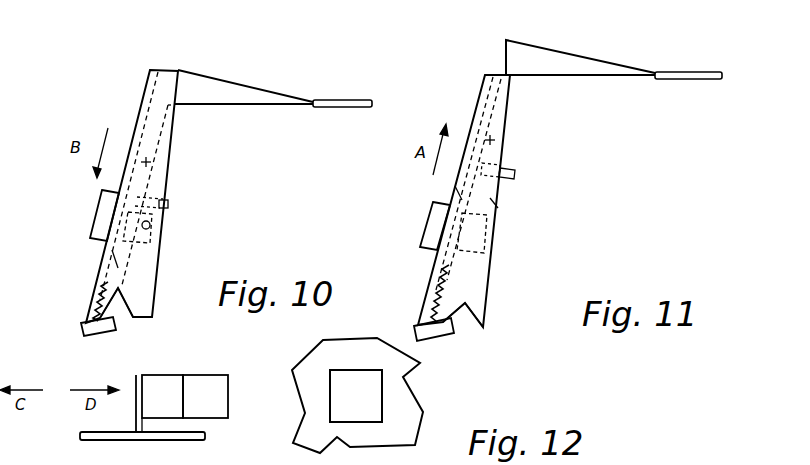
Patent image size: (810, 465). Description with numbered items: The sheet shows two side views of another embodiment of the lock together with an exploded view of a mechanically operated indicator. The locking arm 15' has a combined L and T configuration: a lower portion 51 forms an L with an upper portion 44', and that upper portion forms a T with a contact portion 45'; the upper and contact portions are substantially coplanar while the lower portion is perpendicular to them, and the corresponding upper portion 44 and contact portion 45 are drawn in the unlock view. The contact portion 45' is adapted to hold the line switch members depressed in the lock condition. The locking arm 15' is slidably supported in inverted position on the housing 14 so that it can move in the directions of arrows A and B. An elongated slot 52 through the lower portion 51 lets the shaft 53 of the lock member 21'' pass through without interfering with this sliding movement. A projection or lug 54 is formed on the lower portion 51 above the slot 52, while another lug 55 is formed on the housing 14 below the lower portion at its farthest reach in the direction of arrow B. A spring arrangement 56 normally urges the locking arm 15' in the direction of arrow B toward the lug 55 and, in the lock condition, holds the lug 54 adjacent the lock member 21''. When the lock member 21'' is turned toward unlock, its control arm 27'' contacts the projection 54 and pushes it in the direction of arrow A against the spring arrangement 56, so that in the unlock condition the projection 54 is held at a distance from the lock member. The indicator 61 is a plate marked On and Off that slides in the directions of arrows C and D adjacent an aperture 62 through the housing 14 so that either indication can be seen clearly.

In FIG. 10, the housing 14 is at (138, 298).
In FIG. 11, the housing 14 is at (481, 304).
In FIG. 12, the housing 14 is at (400, 393).
In FIG. 10, the locking arm 15' is at (154, 196).
In FIG. 11, the locking arm 15' is at (489, 201).
In FIG. 10, the lock member 21'' is at (159, 232).
In FIG. 11, the lock member 21'' is at (497, 233).
In FIG. 10, the control arm 27'' is at (177, 227).
In FIG. 11, the control arm 27'' is at (523, 205).
In FIG. 11, the arm 44 is at (580, 54).
In FIG. 10, the upper portion 44' is at (243, 81).
In FIG. 11, the rod 45 is at (688, 62).
In FIG. 10, the contact portion 45' is at (347, 88).
In FIG. 10, the lower portion 51 is at (151, 163).
In FIG. 11, the lower portion 51 is at (495, 140).
In FIG. 10, the elongated slot 52 is at (110, 258).
In FIG. 11, the elongated slot 52 is at (457, 193).
In FIG. 10, the shaft 53 is at (95, 231).
In FIG. 11, the shaft 53 is at (438, 237).
In FIG. 10, the projection or lug 54 is at (168, 205).
In FIG. 11, the projection or lug 54 is at (515, 173).
In FIG. 10, the projection or lug 55 is at (105, 332).
In FIG. 11, the projection or lug 55 is at (447, 344).
In FIG. 10, the spring arrangement 56 is at (95, 304).
In FIG. 11, the spring arrangement 56 is at (449, 300).
In FIG. 10, the indicator 61 is at (172, 375).
In FIG. 12, the aperture 62 is at (370, 407).